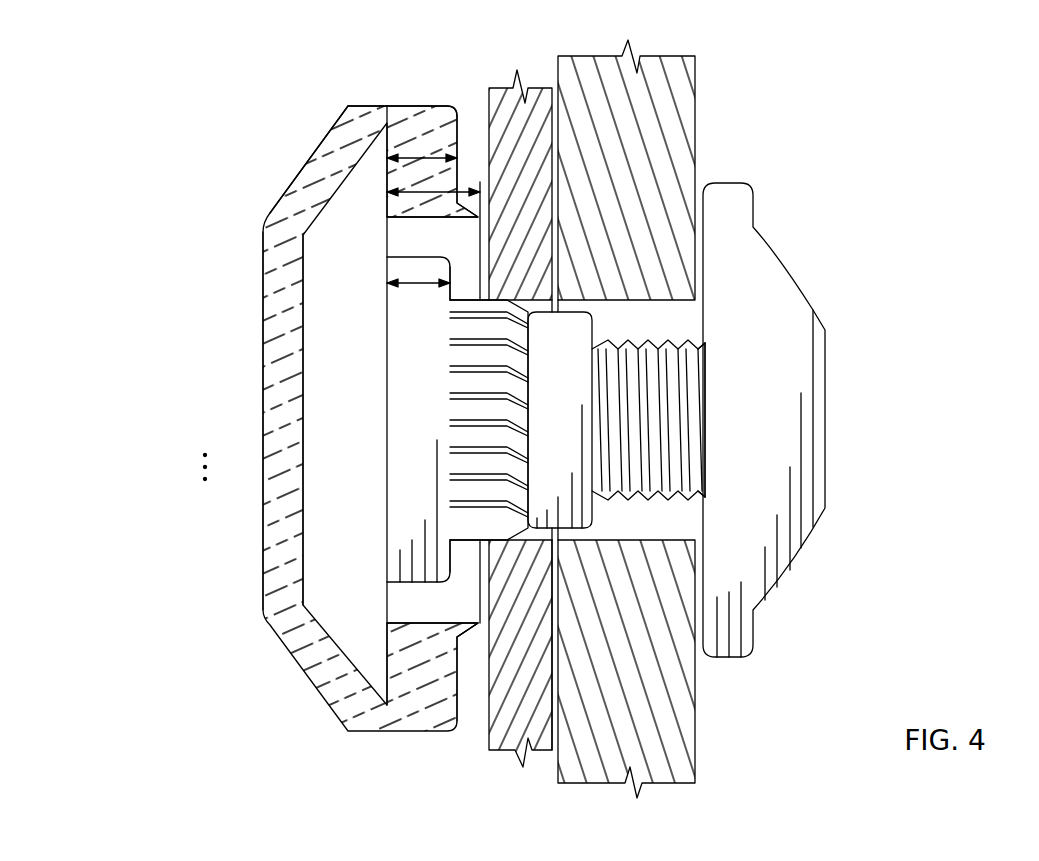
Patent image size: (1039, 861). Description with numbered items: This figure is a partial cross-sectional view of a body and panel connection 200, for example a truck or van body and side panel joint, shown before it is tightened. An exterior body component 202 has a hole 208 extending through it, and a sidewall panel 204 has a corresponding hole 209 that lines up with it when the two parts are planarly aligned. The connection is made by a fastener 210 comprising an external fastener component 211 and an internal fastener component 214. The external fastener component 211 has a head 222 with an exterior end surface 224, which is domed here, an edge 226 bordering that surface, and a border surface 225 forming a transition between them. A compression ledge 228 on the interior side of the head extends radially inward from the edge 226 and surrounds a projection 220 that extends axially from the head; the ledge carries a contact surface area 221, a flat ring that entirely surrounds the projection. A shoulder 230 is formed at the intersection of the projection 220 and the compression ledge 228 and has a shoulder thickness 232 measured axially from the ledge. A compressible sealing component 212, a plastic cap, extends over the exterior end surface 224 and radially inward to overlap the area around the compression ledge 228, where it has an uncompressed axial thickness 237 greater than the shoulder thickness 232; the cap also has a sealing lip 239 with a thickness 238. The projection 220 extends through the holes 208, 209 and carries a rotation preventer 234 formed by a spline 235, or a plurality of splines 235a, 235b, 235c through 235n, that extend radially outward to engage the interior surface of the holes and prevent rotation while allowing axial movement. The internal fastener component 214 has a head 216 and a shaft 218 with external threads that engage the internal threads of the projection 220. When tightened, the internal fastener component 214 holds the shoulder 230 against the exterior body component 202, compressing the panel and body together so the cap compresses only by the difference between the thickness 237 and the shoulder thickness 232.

The body and panel connection 200 is at (226, 88).
The exterior body component 202 is at (531, 758).
The sidewall panel 204 is at (687, 86).
The hole 208 is at (530, 540).
The hole 209 is at (670, 300).
The fastener 210 is at (298, 766).
The external fastener component 211 is at (299, 684).
The compressible sealing component 212 is at (282, 196).
The internal fastener component 214 is at (816, 573).
The head 216 is at (812, 377).
The shaft 218 is at (688, 517).
The projection 220 is at (590, 294).
The contact surface area 221 is at (552, 600).
The head 222 is at (312, 540).
The exterior end surface 224 is at (303, 603).
The border surface 225 is at (322, 143).
The edge 226 is at (387, 118).
The compression ledge 228 is at (398, 120).
The shoulder 230 is at (468, 262).
The shoulder thickness 232 is at (417, 280).
The rotation preventer 234 is at (450, 568).
The spline 235 is at (455, 324).
The spline 235a is at (467, 342).
The spline 235b is at (467, 372).
The spline 235c is at (467, 398).
The spline 235n is at (467, 518).
The uncompressed axial thickness 237 is at (427, 150).
The thickness 238 is at (427, 196).
The sealing lip 239 is at (469, 632).